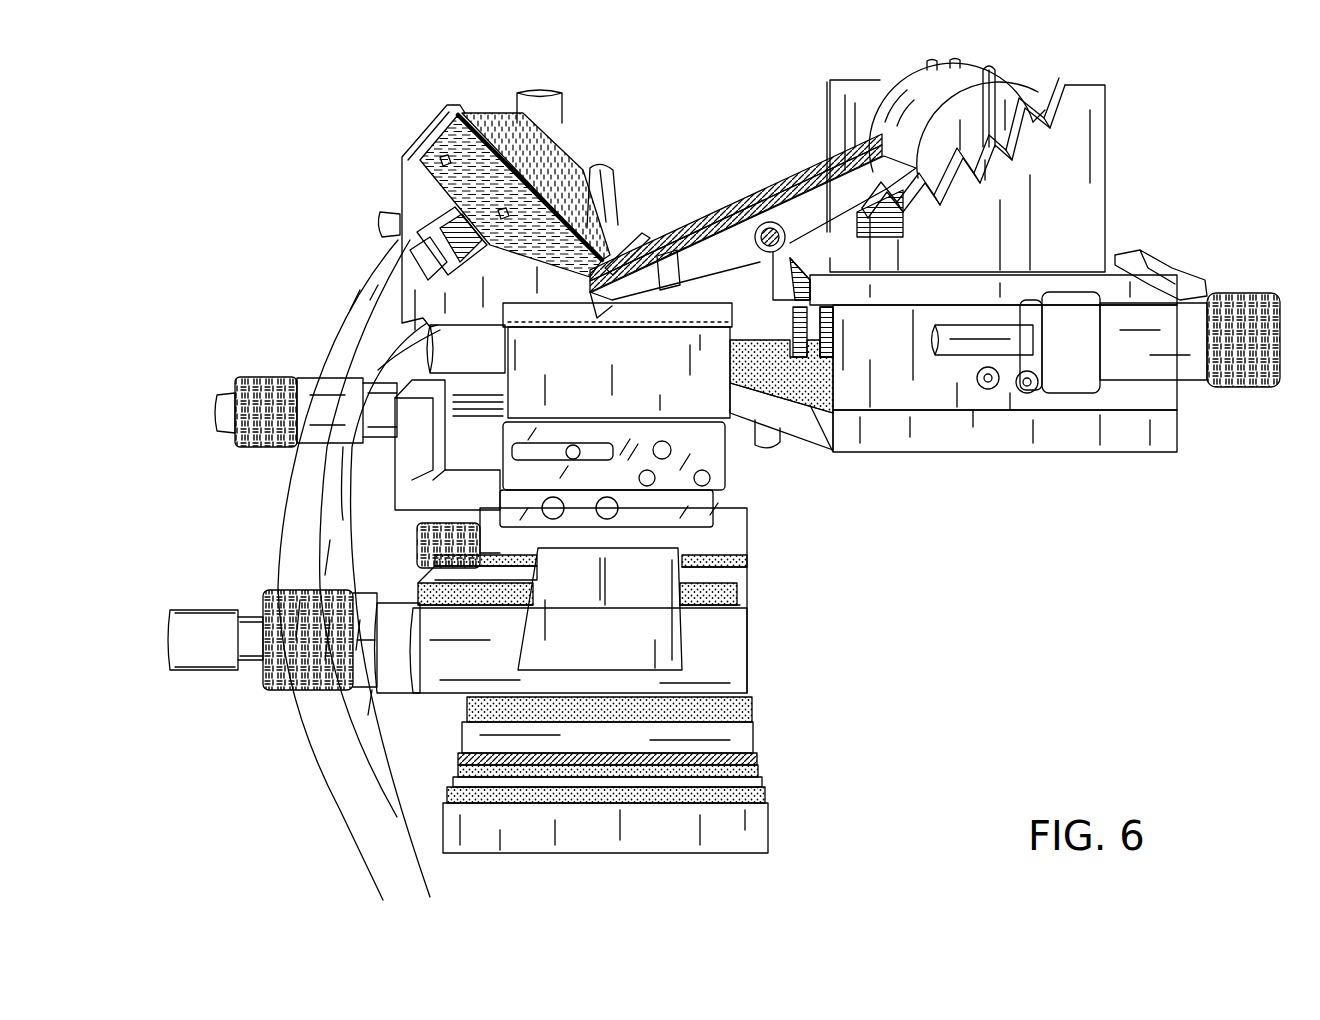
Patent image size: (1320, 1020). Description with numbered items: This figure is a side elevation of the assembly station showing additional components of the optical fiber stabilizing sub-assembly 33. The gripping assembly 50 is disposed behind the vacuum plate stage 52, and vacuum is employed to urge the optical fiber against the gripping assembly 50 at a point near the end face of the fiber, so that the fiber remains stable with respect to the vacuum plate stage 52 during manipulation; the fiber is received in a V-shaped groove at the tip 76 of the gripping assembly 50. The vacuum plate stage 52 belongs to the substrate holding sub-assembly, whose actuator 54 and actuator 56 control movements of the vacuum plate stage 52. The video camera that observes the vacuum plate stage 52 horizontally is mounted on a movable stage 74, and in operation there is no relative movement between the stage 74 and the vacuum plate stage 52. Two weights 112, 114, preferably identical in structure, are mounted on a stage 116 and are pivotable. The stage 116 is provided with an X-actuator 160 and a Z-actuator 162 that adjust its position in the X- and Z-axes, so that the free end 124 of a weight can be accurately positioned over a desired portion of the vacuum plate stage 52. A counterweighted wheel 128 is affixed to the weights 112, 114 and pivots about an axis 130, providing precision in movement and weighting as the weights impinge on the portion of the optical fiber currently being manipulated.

The optical fiber stabilizing sub-assembly 33 is at (256, 488).
The gripping assembly 50 is at (508, 116).
The vacuum plate stage 52 is at (740, 322).
The actuator 54 is at (230, 372).
The actuator 56 is at (262, 695).
The movable stage 74 is at (705, 660).
The tip 76 is at (644, 236).
The weight 112 is at (742, 198).
The weight 114 is at (800, 192).
The stage 116 is at (1108, 128).
The free end 124 is at (588, 323).
The wheel 128 is at (1013, 82).
The axis 130 is at (986, 78).
The X-actuator 160 is at (1230, 388).
The Z-actuator 162 is at (1170, 252).